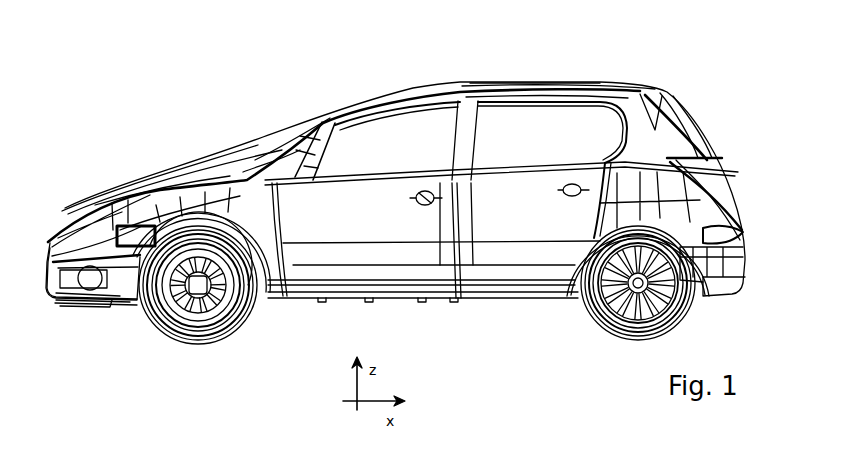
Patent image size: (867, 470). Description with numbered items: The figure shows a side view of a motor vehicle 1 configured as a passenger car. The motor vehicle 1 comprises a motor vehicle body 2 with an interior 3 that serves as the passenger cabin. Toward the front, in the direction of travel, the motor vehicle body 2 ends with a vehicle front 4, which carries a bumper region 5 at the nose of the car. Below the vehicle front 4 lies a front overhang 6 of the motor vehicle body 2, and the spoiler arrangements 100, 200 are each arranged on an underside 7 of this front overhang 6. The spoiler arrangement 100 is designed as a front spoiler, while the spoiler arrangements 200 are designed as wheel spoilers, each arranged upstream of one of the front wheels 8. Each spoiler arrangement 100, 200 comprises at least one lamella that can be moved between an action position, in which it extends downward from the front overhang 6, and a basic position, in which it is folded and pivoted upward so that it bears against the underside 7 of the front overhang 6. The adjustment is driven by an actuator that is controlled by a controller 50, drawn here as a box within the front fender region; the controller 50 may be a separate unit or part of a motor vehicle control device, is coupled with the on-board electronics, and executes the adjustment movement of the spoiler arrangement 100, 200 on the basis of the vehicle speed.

The motor vehicle 1 is at (208, 140).
The motor vehicle body 2 is at (570, 104).
The interior 3 is at (410, 136).
The vehicle front 4 is at (58, 198).
The front bumper 5 is at (68, 265).
The front overhang 6 is at (65, 318).
The underside 7 is at (78, 302).
The front wheels 8 is at (207, 344).
The controller 50 is at (140, 225).
The spoiler arrangement 100 is at (111, 318).
The spoiler arrangements 200 is at (113, 356).